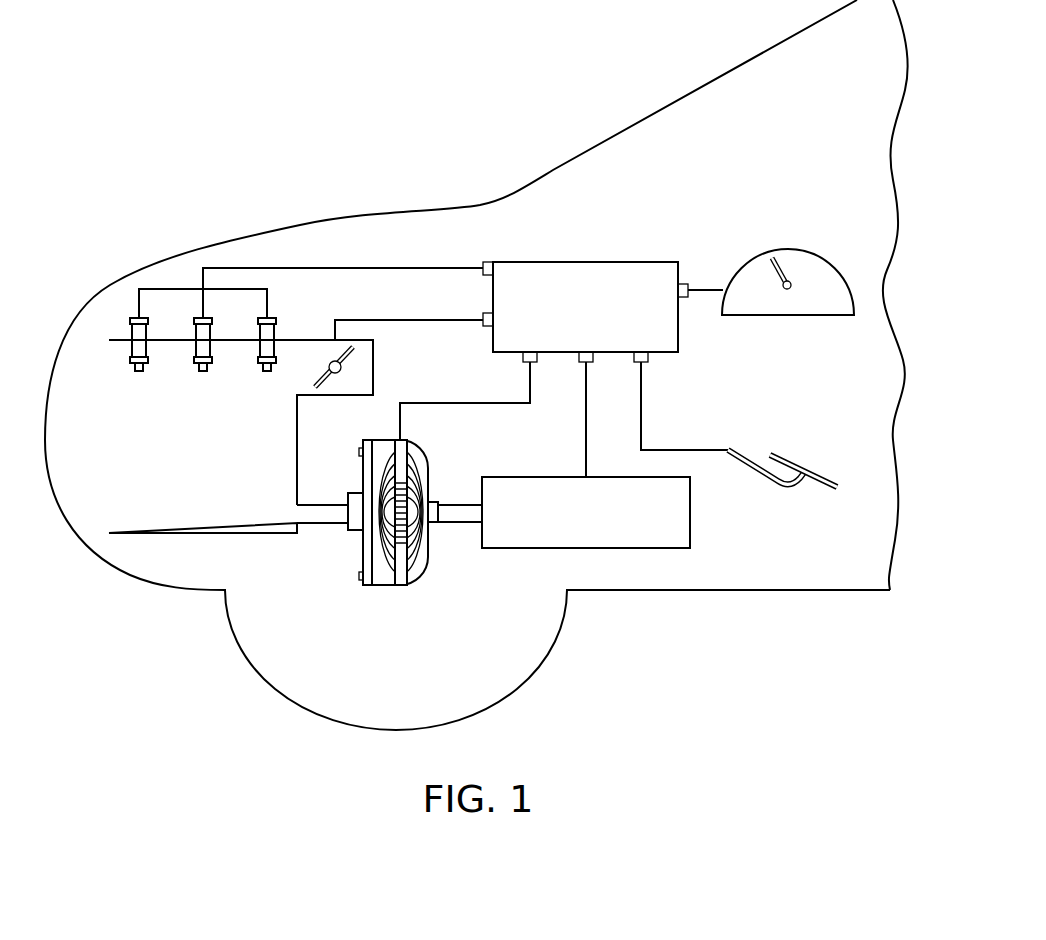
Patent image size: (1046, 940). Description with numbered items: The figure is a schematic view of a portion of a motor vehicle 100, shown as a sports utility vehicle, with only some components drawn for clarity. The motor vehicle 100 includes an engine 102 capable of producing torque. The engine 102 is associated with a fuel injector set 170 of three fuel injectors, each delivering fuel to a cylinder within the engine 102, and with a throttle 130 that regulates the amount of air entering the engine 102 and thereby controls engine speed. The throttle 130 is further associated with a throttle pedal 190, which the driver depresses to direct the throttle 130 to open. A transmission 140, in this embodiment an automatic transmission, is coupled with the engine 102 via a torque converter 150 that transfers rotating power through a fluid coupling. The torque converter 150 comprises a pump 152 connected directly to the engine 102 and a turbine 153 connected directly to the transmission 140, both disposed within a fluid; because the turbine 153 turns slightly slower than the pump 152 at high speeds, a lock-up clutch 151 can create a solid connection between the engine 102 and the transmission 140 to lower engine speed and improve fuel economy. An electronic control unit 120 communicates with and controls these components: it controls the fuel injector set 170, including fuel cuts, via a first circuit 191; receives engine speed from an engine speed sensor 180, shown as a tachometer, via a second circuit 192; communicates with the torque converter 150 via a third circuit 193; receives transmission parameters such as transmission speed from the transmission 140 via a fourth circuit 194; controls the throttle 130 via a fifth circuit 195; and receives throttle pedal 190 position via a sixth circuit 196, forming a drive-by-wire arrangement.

The motor vehicle 100 is at (358, 137).
The engine 102 is at (131, 540).
The electronic control unit 120 is at (585, 262).
The throttle 130 is at (330, 362).
The transmission 140 is at (690, 515).
The torque converter 150 is at (385, 565).
The lock-up clutch 151 is at (362, 553).
The pump 152 is at (428, 580).
The turbine 153 is at (390, 573).
The fuel injector set 170 is at (137, 318).
The engine speed sensor 180 is at (785, 250).
The throttle pedal 190 is at (794, 467).
The first circuit 191 is at (378, 268).
The second circuit 192 is at (706, 283).
The third circuit 193 is at (465, 403).
The fourth circuit 194 is at (586, 441).
The fifth circuit 195 is at (433, 320).
The sixth circuit 196 is at (641, 405).